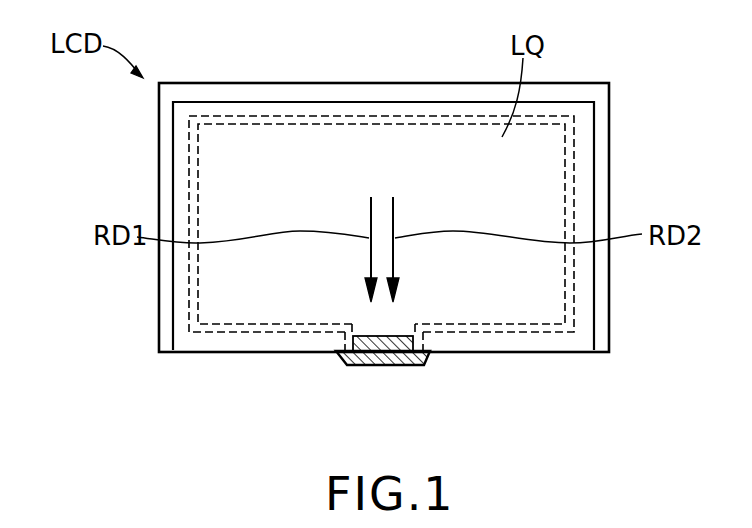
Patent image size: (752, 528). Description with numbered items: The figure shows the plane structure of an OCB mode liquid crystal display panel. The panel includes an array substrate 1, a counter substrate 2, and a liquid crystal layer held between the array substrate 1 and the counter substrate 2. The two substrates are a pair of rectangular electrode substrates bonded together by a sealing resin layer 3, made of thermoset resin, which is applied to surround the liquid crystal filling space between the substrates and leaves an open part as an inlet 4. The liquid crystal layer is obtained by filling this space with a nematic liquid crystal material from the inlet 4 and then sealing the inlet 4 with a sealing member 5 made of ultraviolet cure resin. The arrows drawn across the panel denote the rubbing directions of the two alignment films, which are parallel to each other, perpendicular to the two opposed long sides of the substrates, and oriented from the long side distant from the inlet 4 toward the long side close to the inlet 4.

The array substrate 1 is at (611, 105).
The counter substrate 2 is at (594, 155).
The sealing resin layer 3 is at (575, 303).
The inlet 4 is at (357, 371).
The sealing member 5 is at (393, 365).